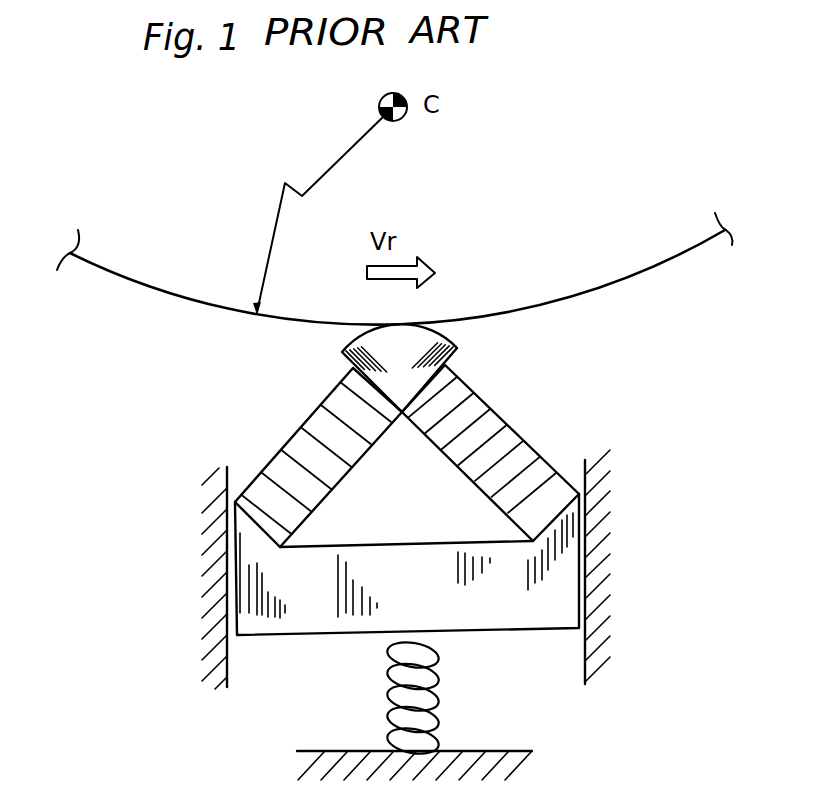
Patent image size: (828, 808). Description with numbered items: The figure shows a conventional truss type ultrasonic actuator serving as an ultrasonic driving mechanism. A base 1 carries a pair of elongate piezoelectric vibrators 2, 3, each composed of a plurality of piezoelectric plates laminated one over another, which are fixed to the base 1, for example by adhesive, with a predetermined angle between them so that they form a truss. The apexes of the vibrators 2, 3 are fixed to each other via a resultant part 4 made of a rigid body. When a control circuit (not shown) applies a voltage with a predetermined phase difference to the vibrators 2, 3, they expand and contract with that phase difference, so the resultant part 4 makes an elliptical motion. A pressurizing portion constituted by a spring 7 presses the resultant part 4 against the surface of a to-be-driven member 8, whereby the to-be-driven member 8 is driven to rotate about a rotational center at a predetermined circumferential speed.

The base 1 is at (557, 583).
The elongate piezoelectric vibrator 2 is at (357, 450).
The elongate piezoelectric vibrator 3 is at (500, 423).
The resultant part 4 is at (457, 346).
The spring 7 is at (460, 689).
The to-be-driven member 8 is at (643, 229).